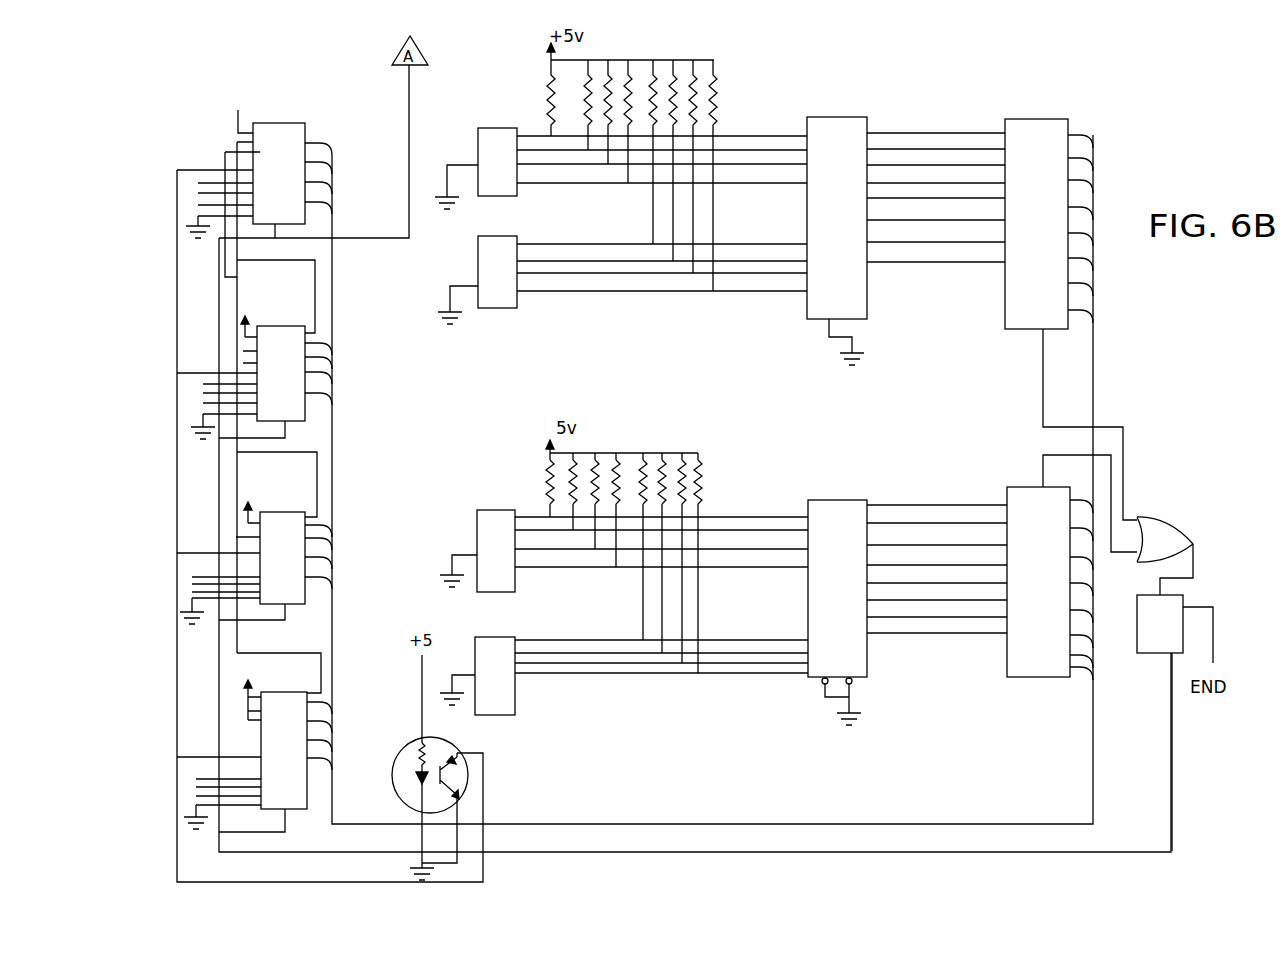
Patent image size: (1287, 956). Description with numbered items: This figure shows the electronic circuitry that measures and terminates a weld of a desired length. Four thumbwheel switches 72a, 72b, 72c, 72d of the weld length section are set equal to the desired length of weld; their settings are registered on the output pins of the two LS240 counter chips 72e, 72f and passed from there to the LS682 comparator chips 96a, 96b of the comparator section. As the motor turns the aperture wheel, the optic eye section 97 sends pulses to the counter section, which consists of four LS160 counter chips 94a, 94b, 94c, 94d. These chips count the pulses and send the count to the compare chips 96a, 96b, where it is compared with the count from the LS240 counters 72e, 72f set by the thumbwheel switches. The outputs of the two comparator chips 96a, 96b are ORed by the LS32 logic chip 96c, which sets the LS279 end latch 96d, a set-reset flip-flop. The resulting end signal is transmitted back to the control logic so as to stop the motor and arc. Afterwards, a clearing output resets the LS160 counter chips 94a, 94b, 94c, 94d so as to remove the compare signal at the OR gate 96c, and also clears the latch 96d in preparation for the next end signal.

The LS160 counter chip 94a is at (297, 136).
The LS160 counter chip 94b is at (297, 338).
The LS160 counter chip 94c is at (299, 524).
The LS160 counter chip 94d is at (299, 702).
The thumbwheel switch 72a is at (512, 171).
The thumbwheel switch 72b is at (512, 280).
The thumbwheel switch 72c is at (510, 553).
The thumbwheel switch 72d is at (510, 685).
The LS240 counter chip 72e is at (850, 516).
The LS240 counter chip 72f is at (850, 128).
The LS682 comparator chip 96a is at (1048, 135).
The LS682 comparator chip 96b is at (1022, 503).
The LS32 OR gate 96c is at (1174, 552).
The LS279 end latch 96d is at (1176, 635).
The optic eye section 97 is at (450, 754).